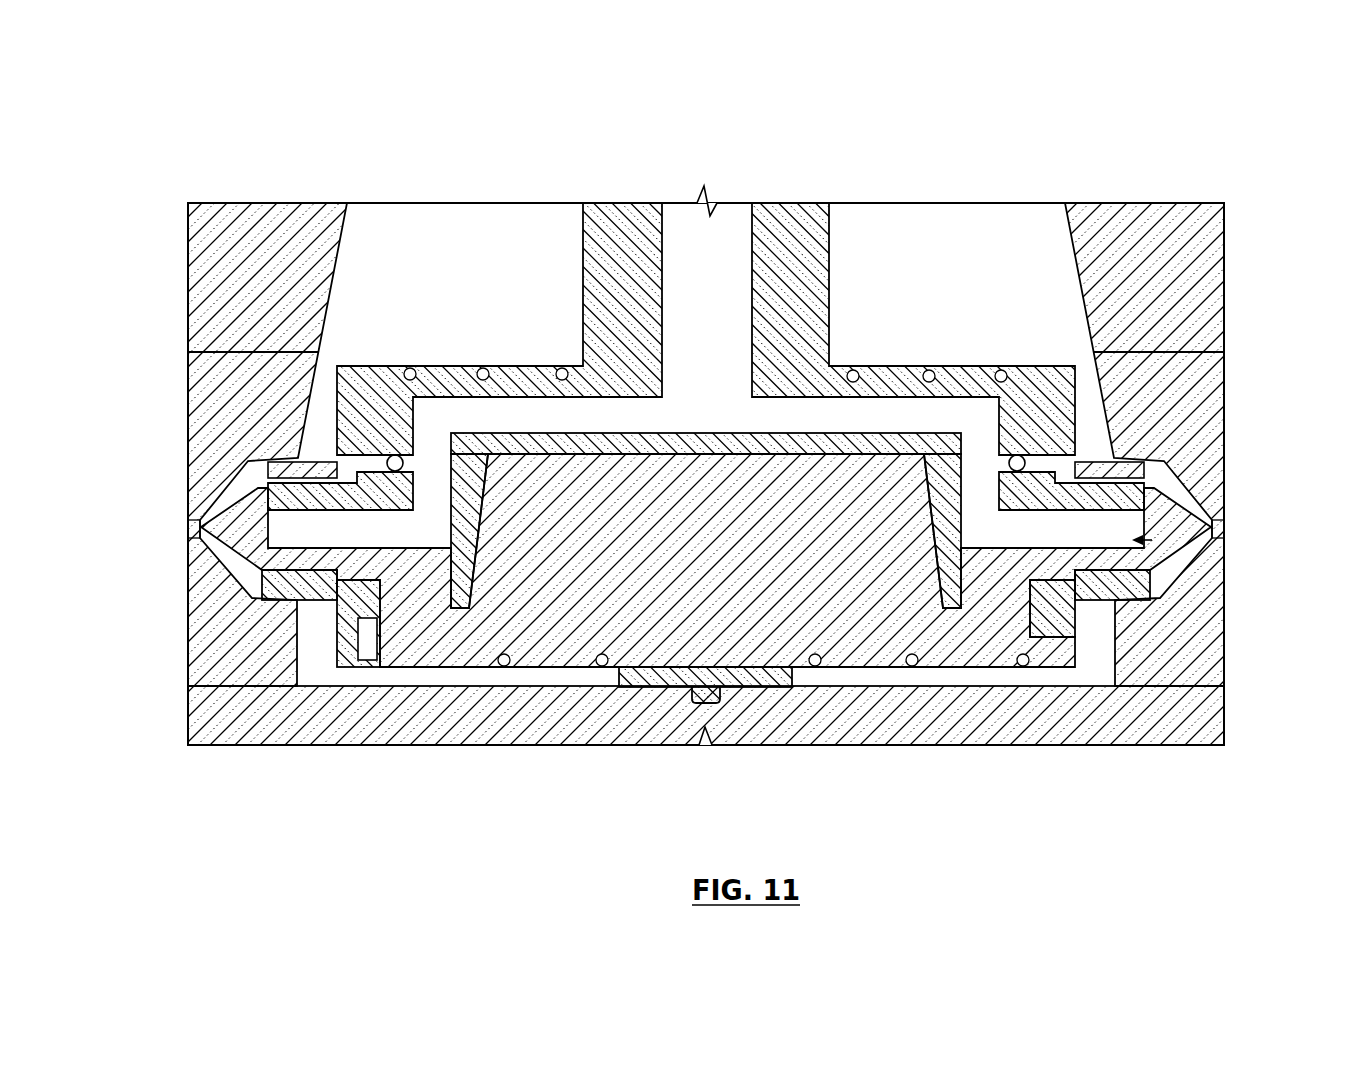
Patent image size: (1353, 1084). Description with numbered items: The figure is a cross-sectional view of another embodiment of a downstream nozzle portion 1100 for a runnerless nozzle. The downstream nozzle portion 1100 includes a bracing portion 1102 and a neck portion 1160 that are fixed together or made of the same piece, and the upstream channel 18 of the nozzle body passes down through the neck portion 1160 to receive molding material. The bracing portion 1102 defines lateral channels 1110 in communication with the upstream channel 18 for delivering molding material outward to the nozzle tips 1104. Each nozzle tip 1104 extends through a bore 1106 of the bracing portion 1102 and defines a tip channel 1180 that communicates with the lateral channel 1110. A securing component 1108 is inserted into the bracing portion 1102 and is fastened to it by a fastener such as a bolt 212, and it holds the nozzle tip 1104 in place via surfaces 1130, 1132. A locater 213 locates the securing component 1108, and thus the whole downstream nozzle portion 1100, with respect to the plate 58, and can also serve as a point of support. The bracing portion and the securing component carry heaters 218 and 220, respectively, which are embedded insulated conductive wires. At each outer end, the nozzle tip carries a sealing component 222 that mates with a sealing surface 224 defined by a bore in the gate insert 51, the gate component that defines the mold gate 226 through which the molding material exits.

The downstream nozzle portion 1100 is at (1127, 153).
The upstream channel 18 is at (733, 218).
The neck portion 1160 is at (808, 243).
The heater 218 is at (476, 366).
The lateral channel 1110 is at (847, 420).
The bracing portion 1102 is at (893, 385).
The bore 1106 is at (1022, 456).
The mold gate 226 is at (180, 529).
The tip channel 1180 is at (1037, 542).
The nozzle tip 1104 is at (1180, 590).
The sealing surface 224 is at (265, 585).
The gate insert 51 is at (213, 640).
The bolt 212 is at (369, 650).
The heater 220 is at (505, 670).
The plate 58 is at (598, 746).
The locater 213 is at (737, 690).
The securing component 1108 is at (830, 632).
The surface 1132 is at (924, 540).
The surface 1130 is at (960, 592).
The sealing component 222 is at (1088, 600).